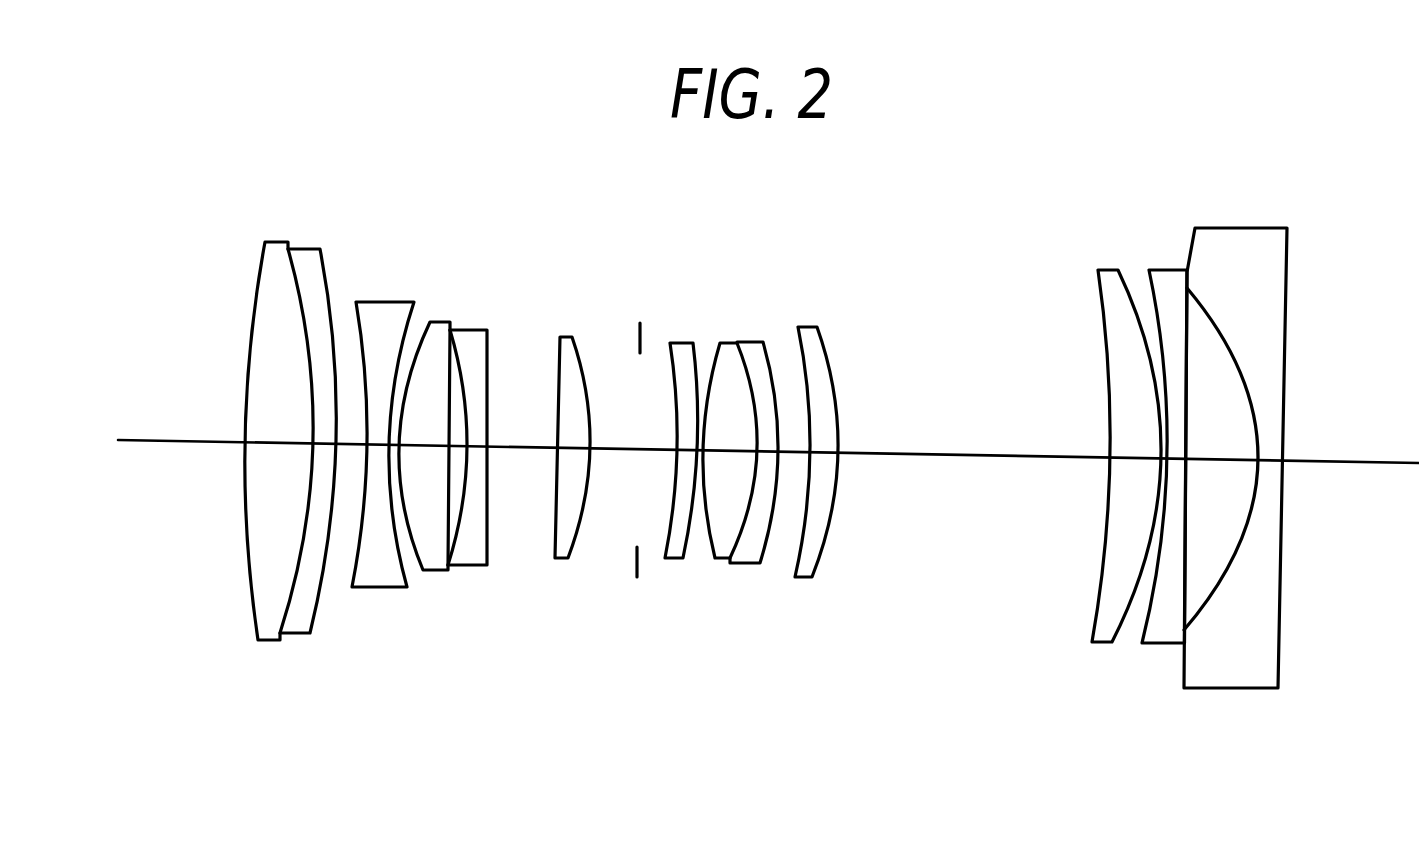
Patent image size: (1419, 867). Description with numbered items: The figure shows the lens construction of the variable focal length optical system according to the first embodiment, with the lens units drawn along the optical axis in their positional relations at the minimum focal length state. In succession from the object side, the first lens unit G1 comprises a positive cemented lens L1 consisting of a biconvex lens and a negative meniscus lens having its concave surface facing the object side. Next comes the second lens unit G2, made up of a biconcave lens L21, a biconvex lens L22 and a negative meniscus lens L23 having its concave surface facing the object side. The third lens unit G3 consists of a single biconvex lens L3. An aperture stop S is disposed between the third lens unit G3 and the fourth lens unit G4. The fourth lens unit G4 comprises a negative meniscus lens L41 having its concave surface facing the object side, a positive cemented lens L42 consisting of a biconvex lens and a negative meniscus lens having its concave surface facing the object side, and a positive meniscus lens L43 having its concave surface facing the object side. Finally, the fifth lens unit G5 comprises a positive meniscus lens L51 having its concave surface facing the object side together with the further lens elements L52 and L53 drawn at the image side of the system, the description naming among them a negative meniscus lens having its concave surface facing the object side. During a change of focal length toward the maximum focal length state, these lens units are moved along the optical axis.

The positive cemented lens L1 is at (300, 250).
The biconcave lens L21 is at (378, 302).
The biconvex lens L22 is at (433, 322).
The negative meniscus lens L23 is at (467, 330).
The biconvex lens L3 is at (565, 337).
The aperture stop S is at (640, 429).
The negative meniscus lens L41 is at (680, 343).
The positive cemented lens L42 is at (728, 343).
The positive meniscus lens L43 is at (812, 327).
The positive meniscus lens L51 is at (1108, 270).
The second lens of fifth lens group L52 is at (1170, 270).
The third lens of fifth lens group L53 is at (1245, 228).
The first lens unit G1 is at (290, 437).
The second lens unit G2 is at (428, 424).
The third lens unit G3 is at (566, 414).
The fourth lens unit G4 is at (744, 421).
The fifth lens unit G5 is at (1185, 461).